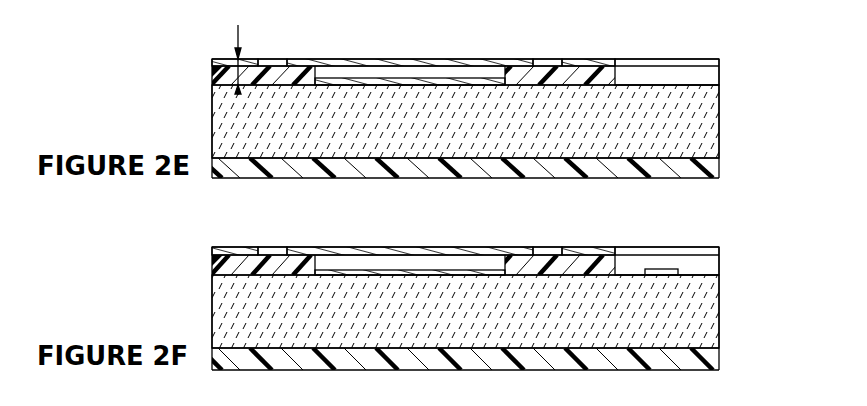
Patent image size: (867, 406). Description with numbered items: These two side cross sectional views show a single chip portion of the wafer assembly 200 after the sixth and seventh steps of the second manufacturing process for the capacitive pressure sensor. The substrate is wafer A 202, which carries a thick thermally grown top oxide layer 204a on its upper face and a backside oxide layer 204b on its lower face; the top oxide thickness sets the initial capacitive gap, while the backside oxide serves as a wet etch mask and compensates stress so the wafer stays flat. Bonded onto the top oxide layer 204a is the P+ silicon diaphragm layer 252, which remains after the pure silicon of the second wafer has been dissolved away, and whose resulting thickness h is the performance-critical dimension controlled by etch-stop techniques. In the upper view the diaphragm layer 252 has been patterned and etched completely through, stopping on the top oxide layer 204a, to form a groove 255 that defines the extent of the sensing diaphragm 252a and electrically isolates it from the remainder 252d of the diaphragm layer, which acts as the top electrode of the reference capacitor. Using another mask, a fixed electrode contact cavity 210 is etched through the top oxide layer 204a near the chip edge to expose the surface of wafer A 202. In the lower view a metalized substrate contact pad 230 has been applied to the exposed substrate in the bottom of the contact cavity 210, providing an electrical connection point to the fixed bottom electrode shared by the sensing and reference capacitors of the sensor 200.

In FIG. 2E, the wafer assembly 200 is at (152, 107).
In FIG. 2F, the wafer assembly 200 is at (152, 296).
In FIG. 2E, the wafer A 202 is at (719, 122).
In FIG. 2F, the wafer A 202 is at (719, 313).
In FIG. 2E, the top oxide layer 204a is at (212, 80).
In FIG. 2F, the top oxide layer 204a is at (212, 268).
In FIG. 2E, the backside oxide layer 204b is at (719, 158).
In FIG. 2F, the backside oxide layer 204b is at (719, 348).
In FIG. 2E, the fixed electrode contact cavity 210 is at (693, 78).
In FIG. 2F, the fixed electrode contact cavity 210 is at (693, 268).
In FIG. 2F, the substrate contact pad 230 is at (660, 268).
In FIG. 2E, the diaphragm layer 252 is at (214, 62).
In FIG. 2F, the diaphragm layer 252 is at (214, 250).
In FIG. 2E, the sensing diaphragm 252a is at (394, 61).
In FIG. 2F, the sensing diaphragm 252a is at (394, 251).
In FIG. 2E, the remainder of the diaphragm layer 252d is at (584, 62).
In FIG. 2F, the remainder of the diaphragm layer 252d is at (584, 252).
In FIG. 2E, the groove 255 is at (272, 58).
In FIG. 2F, the groove 255 is at (272, 249).
In FIG. 2E, the diaphragm layer thickness h is at (237, 51).